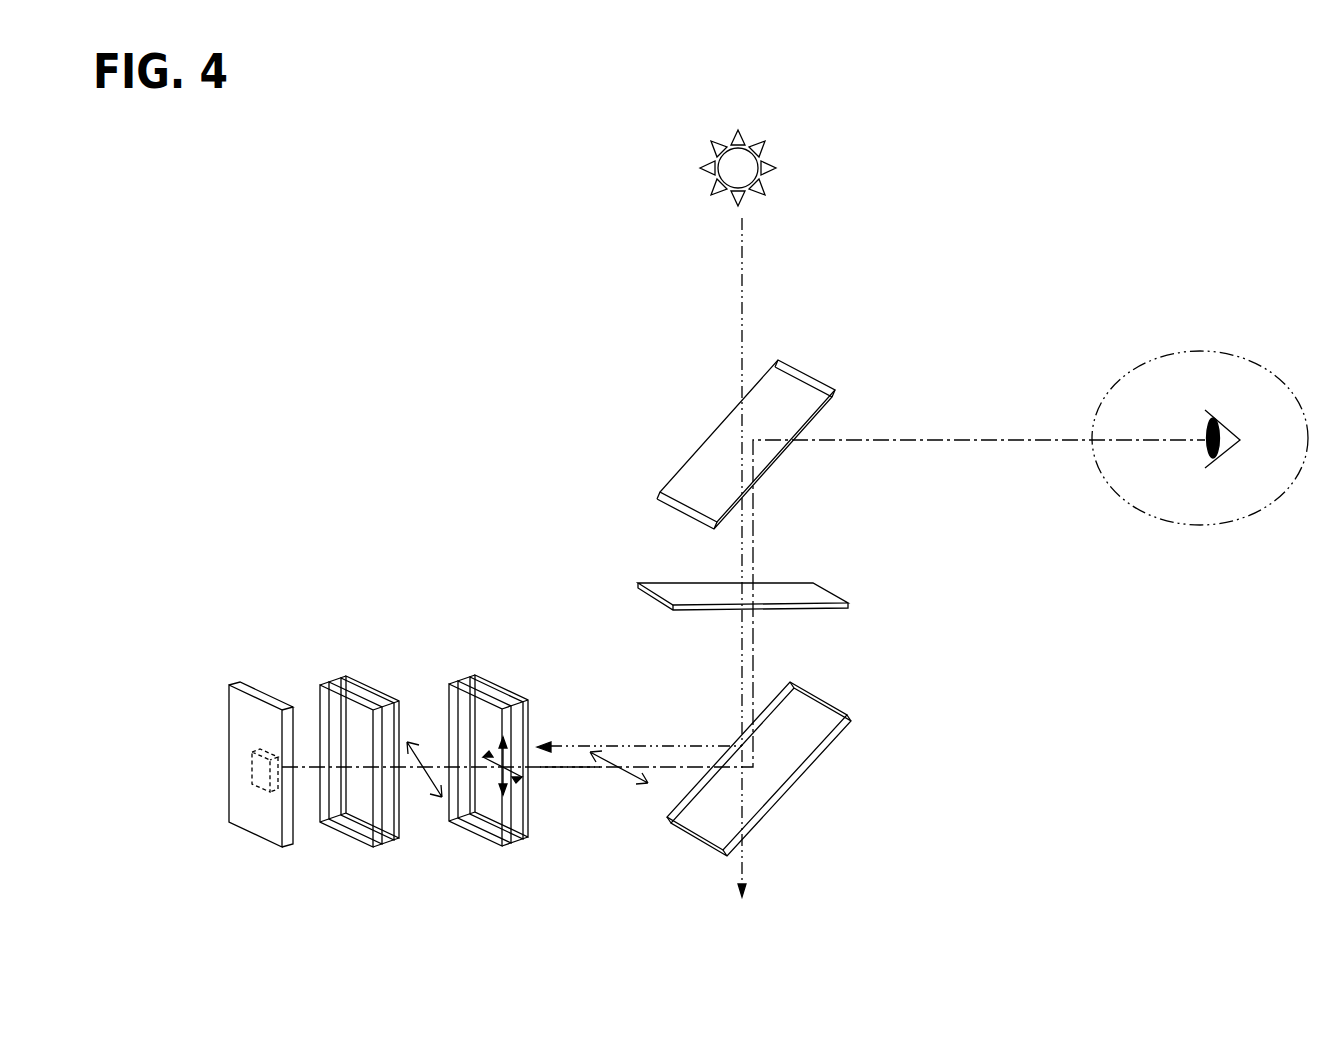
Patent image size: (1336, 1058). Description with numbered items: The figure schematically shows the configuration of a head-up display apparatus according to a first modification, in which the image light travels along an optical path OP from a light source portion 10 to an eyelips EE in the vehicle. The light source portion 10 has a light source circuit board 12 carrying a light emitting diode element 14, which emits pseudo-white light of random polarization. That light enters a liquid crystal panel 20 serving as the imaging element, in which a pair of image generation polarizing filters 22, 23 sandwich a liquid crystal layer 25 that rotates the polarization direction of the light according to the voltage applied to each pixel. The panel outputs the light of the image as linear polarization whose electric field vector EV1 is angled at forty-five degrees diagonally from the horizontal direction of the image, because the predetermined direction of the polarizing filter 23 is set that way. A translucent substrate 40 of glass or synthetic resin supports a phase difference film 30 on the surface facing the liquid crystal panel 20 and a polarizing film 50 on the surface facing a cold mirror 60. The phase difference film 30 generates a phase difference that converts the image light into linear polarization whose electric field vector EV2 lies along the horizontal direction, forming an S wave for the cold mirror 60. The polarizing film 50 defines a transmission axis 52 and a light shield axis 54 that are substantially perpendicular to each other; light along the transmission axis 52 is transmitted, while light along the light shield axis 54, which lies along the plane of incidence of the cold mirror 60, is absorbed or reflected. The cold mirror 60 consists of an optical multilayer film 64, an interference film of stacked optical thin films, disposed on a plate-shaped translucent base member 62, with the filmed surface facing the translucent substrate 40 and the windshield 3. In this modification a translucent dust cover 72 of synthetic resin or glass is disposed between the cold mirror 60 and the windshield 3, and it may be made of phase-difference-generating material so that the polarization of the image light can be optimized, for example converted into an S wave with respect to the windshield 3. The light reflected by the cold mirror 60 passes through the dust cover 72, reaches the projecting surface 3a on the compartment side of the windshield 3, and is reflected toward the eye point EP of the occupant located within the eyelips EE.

The light source portion 10 is at (270, 585).
The light source circuit board 12 is at (235, 683).
The light emitting diode element 14 is at (264, 748).
The liquid crystal panel 20 is at (388, 615).
The image generation polarizing filter 22 is at (323, 683).
The liquid crystal layer 25 is at (340, 682).
The image generation polarizing filter 23 is at (343, 682).
The phase difference film 30 is at (450, 683).
The translucent substrate 40 is at (465, 683).
The polarizing film 50 is at (470, 683).
The transmission axis 52 is at (490, 747).
The light shield axis 54 is at (507, 750).
The cold mirror 60 is at (910, 684).
The translucent base member 62 is at (853, 708).
The optical multilayer film 64 is at (840, 707).
The dust cover 72 is at (827, 590).
The windshield 3 is at (666, 503).
The projecting surface 3a is at (795, 412).
The electric field vector EV1 is at (427, 783).
The electric field vector EV2 is at (620, 768).
The optical path OP is at (562, 772).
The eyelips EE is at (1140, 366).
The eye point EP is at (1222, 417).